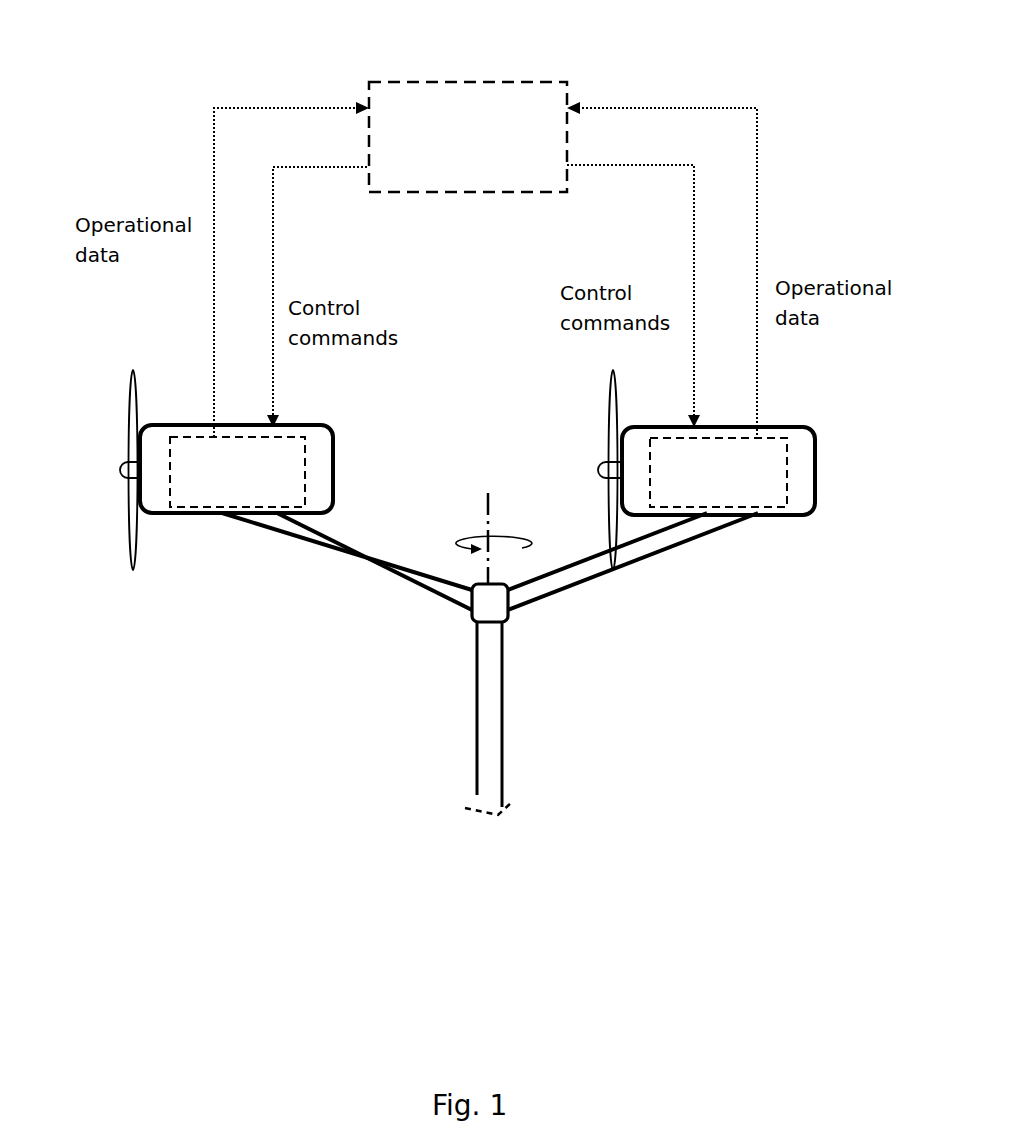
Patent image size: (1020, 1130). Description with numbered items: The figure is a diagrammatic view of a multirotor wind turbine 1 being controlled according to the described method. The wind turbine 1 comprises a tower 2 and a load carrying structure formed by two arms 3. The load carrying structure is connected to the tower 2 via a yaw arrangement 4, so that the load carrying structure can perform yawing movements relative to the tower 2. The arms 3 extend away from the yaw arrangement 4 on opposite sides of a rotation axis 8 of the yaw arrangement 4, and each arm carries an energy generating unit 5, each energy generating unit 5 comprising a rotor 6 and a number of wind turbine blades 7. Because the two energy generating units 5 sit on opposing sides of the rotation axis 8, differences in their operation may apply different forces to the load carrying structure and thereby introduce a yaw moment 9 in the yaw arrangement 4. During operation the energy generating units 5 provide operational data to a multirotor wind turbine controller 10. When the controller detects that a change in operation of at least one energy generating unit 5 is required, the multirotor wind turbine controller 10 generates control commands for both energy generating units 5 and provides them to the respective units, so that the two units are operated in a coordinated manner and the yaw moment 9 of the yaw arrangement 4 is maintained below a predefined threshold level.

The multirotor wind turbine 1 is at (773, 672).
The tower 2 is at (488, 720).
The arms 3 is at (300, 537).
The yaw arrangement 4 is at (493, 609).
The energy generating unit 5 is at (157, 497).
The rotor 6 is at (128, 470).
The wind turbine blades 7 is at (130, 413).
The rotation axis 8 is at (490, 500).
The yaw moment 9 is at (518, 537).
The multirotor wind turbine controller 10 is at (535, 100).